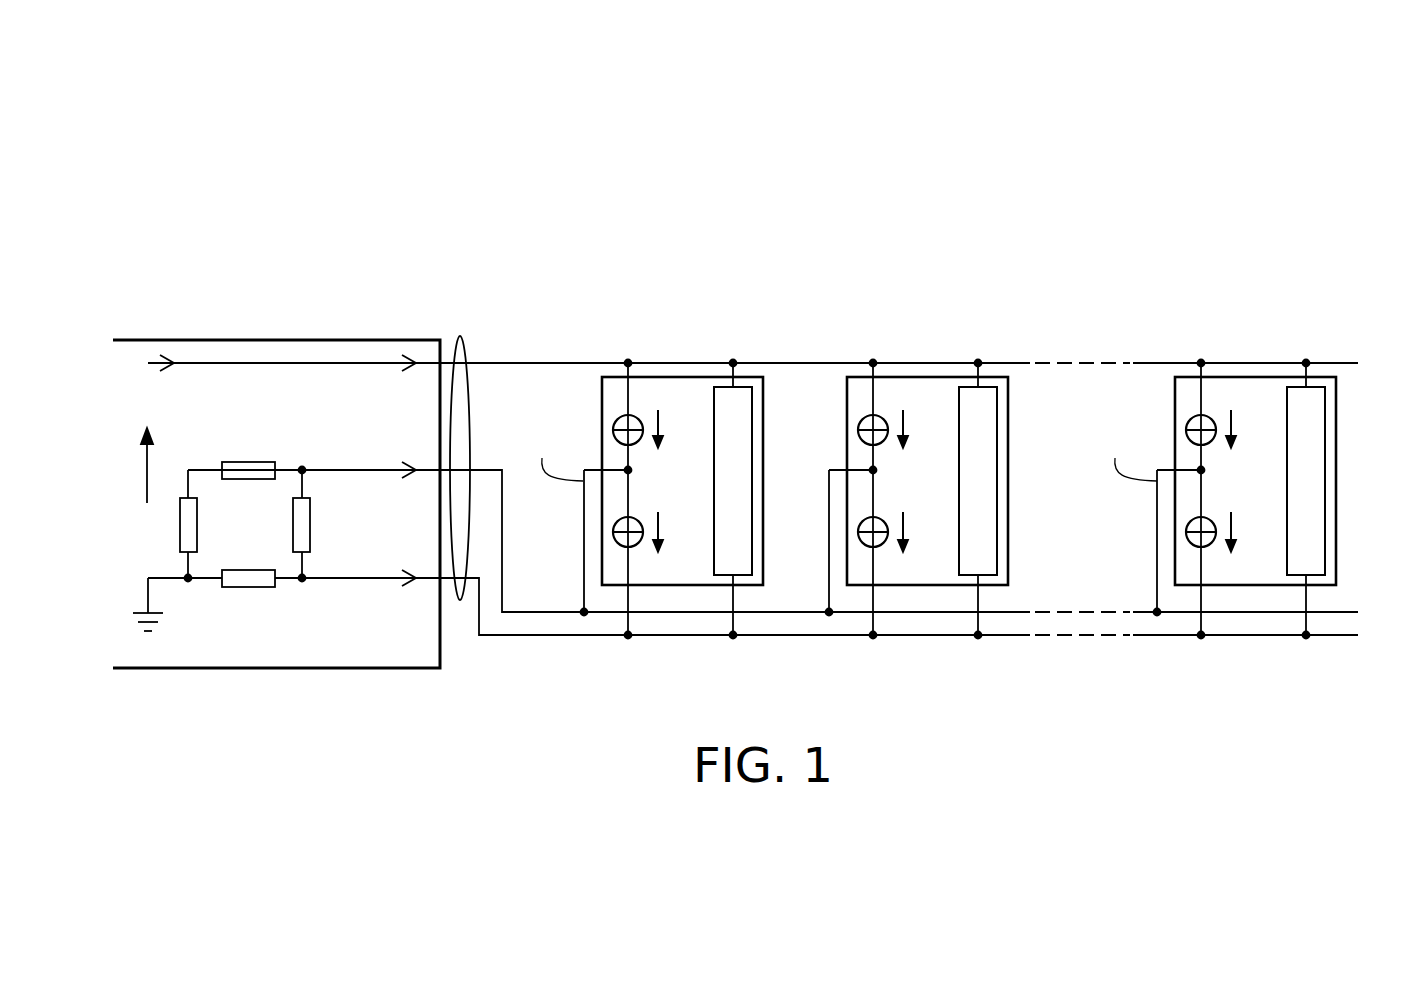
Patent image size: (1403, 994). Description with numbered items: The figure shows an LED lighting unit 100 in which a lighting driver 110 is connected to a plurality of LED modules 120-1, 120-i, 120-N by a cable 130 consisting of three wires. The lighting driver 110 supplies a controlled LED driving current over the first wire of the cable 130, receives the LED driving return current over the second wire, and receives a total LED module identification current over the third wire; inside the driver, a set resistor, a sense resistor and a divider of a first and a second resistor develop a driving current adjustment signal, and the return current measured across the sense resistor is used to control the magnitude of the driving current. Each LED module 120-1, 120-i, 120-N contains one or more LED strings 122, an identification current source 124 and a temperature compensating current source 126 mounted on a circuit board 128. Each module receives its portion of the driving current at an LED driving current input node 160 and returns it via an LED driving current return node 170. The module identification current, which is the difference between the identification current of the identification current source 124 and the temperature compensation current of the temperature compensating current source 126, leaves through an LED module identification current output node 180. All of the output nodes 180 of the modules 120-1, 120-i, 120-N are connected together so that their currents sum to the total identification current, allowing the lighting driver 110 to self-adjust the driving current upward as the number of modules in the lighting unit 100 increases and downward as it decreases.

The LED lighting unit 100 is at (1314, 159).
The lighting driver 110 is at (257, 340).
The LED module 120-1 is at (637, 517).
The LED module 120-i is at (918, 484).
The LED module 120-N is at (1246, 484).
The LED string 122 is at (732, 360).
The identification current source 124 is at (594, 409).
The temperature compensating current source 126 is at (660, 563).
The circuit board 128 is at (693, 585).
The cable 130 is at (460, 337).
The LED driving current input node 160 is at (616, 419).
The LED driving current return node 170 is at (618, 545).
The LED module identification current output node 180 is at (583, 557).